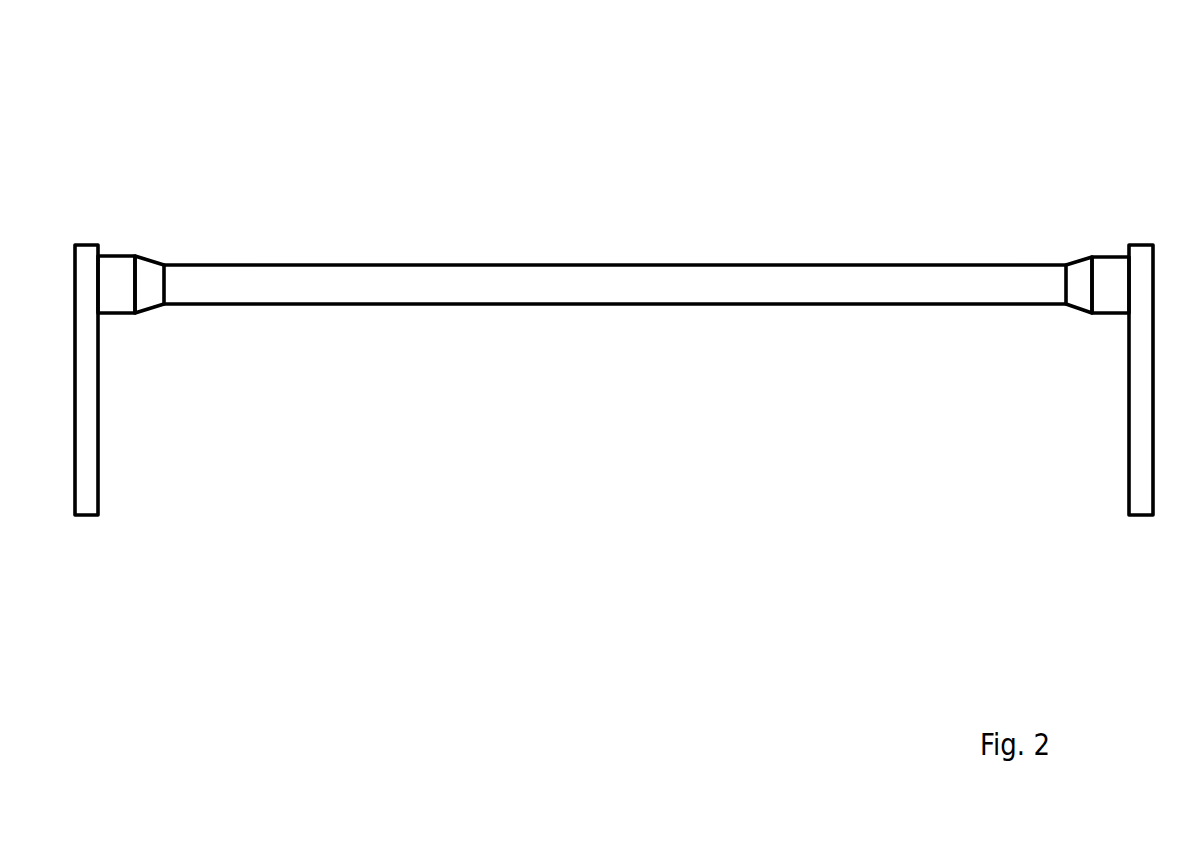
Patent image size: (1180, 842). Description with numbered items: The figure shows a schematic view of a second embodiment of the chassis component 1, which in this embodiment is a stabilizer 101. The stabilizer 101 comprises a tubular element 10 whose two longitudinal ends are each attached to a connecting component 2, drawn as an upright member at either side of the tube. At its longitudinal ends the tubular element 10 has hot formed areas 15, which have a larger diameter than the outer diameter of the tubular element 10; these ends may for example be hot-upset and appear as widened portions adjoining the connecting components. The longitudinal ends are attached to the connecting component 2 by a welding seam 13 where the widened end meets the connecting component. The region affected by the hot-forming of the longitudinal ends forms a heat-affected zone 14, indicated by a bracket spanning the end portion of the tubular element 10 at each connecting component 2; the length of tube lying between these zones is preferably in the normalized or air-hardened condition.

The chassis component 1 is at (608, 271).
The stabilizer 101 is at (608, 271).
The connecting component 2 is at (1127, 383).
The tubular element 10 is at (515, 310).
The welding seam 13 is at (98, 318).
The heat-affected zone 14 is at (608, 328).
The hot formed area 15 is at (140, 315).